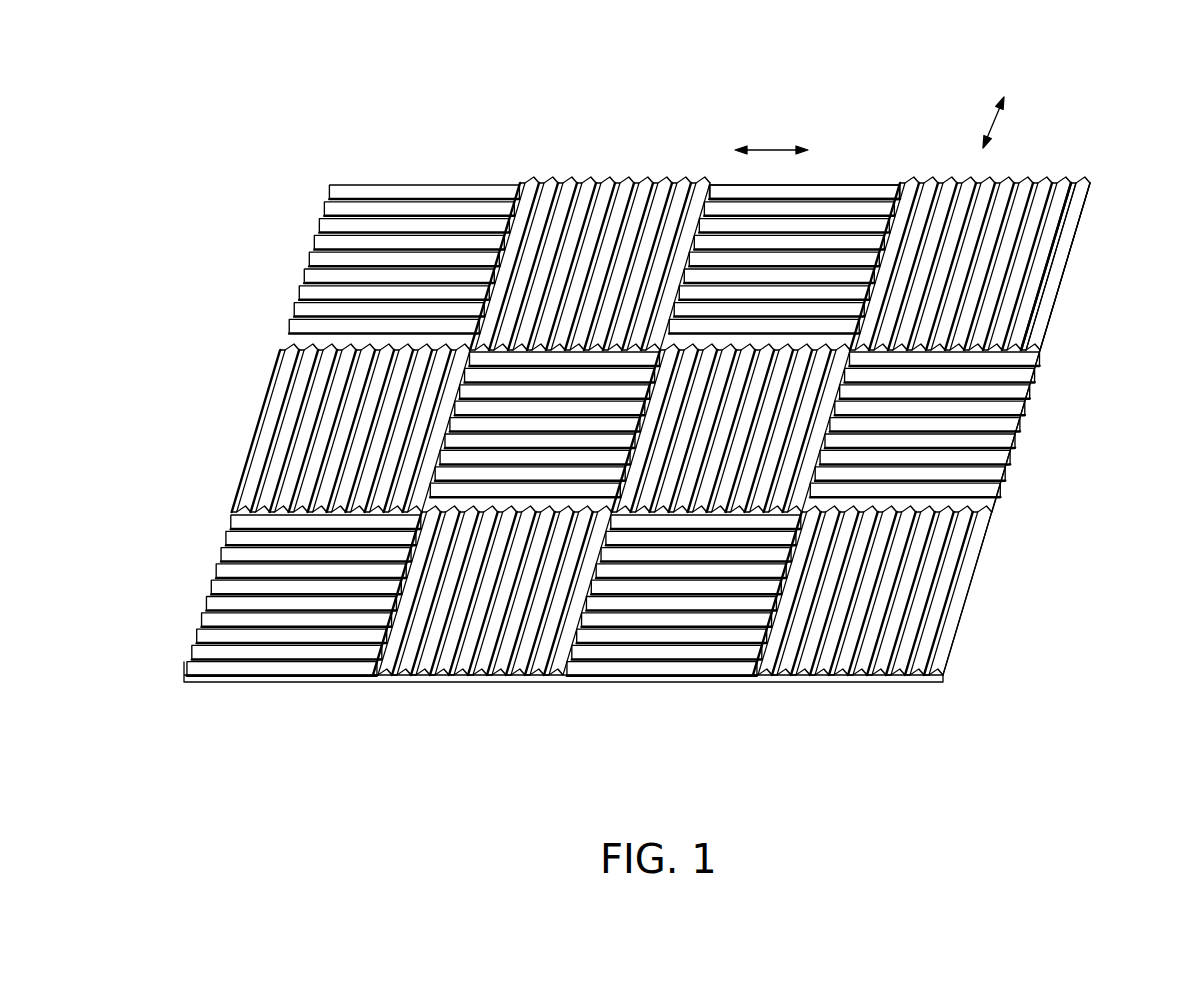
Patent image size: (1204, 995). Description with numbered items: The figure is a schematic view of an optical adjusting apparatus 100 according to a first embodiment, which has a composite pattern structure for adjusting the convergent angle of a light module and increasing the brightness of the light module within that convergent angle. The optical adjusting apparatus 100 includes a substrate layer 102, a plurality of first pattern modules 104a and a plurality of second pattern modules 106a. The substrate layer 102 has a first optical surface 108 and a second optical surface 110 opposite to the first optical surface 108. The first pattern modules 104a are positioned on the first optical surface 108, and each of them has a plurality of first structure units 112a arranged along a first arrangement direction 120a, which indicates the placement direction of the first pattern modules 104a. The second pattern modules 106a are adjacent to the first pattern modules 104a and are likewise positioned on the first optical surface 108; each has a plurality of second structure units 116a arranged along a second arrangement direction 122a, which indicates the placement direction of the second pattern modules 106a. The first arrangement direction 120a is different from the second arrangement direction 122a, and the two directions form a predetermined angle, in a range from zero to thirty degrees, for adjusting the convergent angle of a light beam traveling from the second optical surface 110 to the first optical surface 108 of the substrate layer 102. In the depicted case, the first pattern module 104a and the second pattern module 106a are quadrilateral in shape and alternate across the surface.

The optical adjusting apparatus 100 is at (1196, 71).
The substrate layer 102 is at (1077, 228).
The first pattern module 104a is at (1000, 174).
The second pattern module 106a is at (815, 181).
The first optical surface 108 is at (1050, 308).
The second optical surface 110 is at (1015, 443).
The first structure unit 112a is at (1073, 207).
The second structure unit 116a is at (878, 191).
The first arrangement direction 120a is at (988, 122).
The second arrangement direction 122a is at (770, 149).